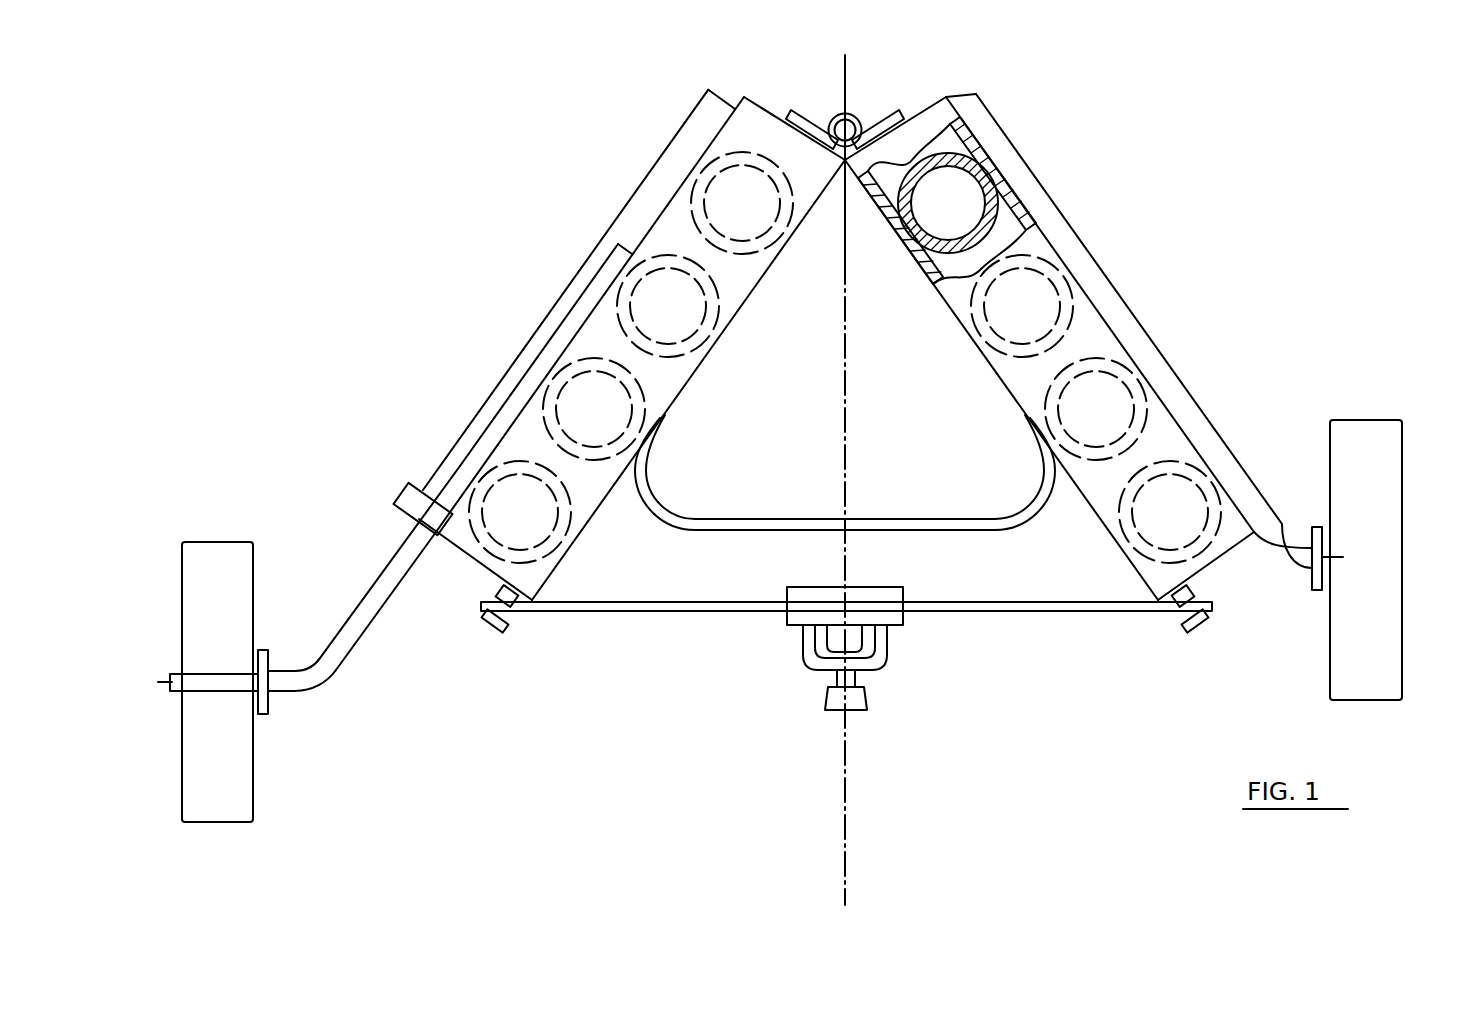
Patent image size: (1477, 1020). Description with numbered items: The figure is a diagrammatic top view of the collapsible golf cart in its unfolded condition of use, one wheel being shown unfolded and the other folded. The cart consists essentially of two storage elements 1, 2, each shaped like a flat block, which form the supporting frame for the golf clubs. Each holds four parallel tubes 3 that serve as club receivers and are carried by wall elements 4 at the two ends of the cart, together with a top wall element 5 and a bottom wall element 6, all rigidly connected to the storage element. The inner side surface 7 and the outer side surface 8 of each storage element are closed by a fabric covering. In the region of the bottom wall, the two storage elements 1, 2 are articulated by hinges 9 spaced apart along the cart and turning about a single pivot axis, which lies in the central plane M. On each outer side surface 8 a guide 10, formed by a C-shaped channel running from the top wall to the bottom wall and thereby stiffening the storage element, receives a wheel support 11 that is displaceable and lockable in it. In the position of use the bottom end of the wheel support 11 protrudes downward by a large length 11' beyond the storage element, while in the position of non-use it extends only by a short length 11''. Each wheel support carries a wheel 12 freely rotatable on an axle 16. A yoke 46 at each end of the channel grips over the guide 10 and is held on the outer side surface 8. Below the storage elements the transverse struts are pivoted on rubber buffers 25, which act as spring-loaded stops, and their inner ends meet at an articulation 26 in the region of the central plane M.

The storage element 1 is at (682, 235).
The storage element 2 is at (1125, 300).
The tube 3 is at (670, 333).
The wall element 4 is at (572, 488).
The wall element 5 is at (777, 110).
The wall element 6 is at (468, 560).
The inner side surface 7 is at (754, 290).
The outer side surface 8 is at (662, 213).
The hinge 9 is at (851, 114).
The guide 10 is at (483, 413).
The wheel support 11 is at (387, 563).
The large length 11' is at (297, 647).
The short length 11'' is at (1314, 480).
The wheel 12 is at (230, 777).
The axle 16 is at (211, 680).
The rubber buffer 25 is at (508, 618).
The articulation 26 is at (800, 667).
The yoke 46 is at (410, 492).
The central plane M is at (845, 370).